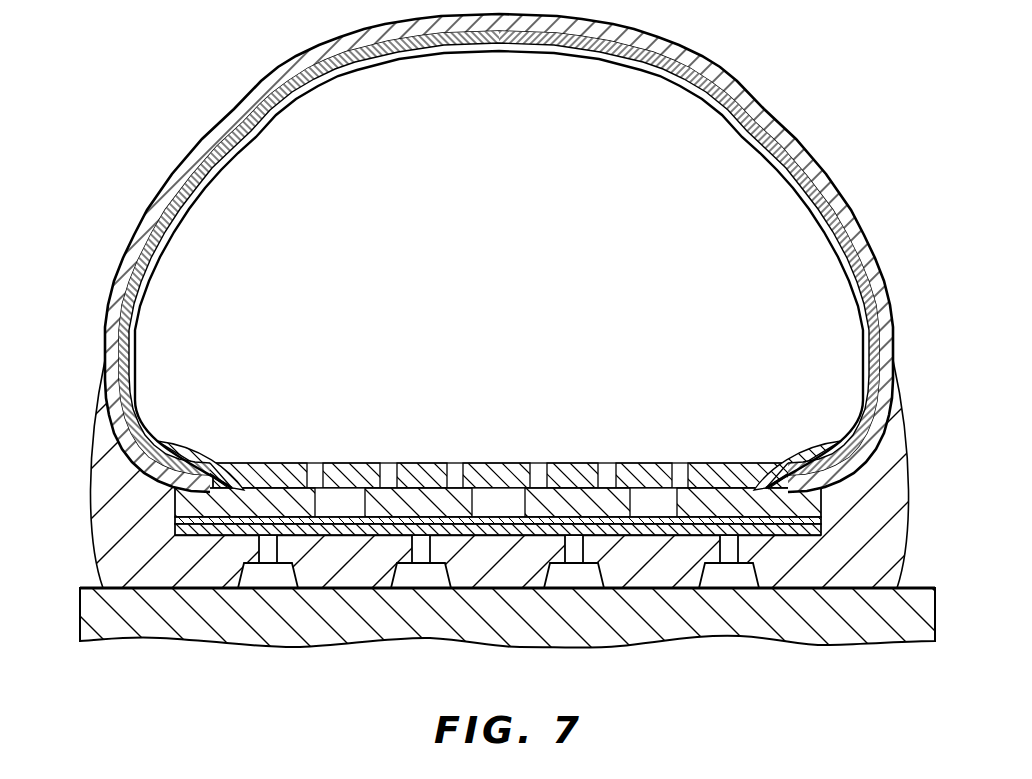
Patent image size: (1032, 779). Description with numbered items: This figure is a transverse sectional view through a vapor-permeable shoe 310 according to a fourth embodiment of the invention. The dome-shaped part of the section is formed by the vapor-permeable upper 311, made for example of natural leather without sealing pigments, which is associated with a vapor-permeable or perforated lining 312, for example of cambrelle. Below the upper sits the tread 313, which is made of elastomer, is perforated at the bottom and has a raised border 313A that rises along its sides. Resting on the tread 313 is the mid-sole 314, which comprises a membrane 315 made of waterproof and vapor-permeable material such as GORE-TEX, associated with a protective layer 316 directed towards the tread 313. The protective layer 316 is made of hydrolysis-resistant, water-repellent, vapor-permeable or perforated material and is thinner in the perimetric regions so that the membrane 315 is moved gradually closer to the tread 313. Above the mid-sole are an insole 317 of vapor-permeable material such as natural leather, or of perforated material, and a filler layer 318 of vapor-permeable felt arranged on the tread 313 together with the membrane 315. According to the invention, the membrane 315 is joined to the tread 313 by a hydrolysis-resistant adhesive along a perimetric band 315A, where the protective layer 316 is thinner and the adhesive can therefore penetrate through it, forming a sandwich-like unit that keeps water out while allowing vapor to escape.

The vapor-permeable shoe 310 is at (499, 253).
The vapor-permeable upper 311 is at (217, 113).
The vapor-permeable or perforated lining 312 is at (172, 234).
The tread 313 is at (653, 573).
The raised border 313A is at (894, 442).
The mid-sole 314 is at (175, 516).
The membrane 315 is at (344, 514).
The perimetric band 315A is at (213, 490).
The protective layer 316 is at (478, 536).
The insole 317 is at (489, 462).
The filler layer 318 is at (414, 462).